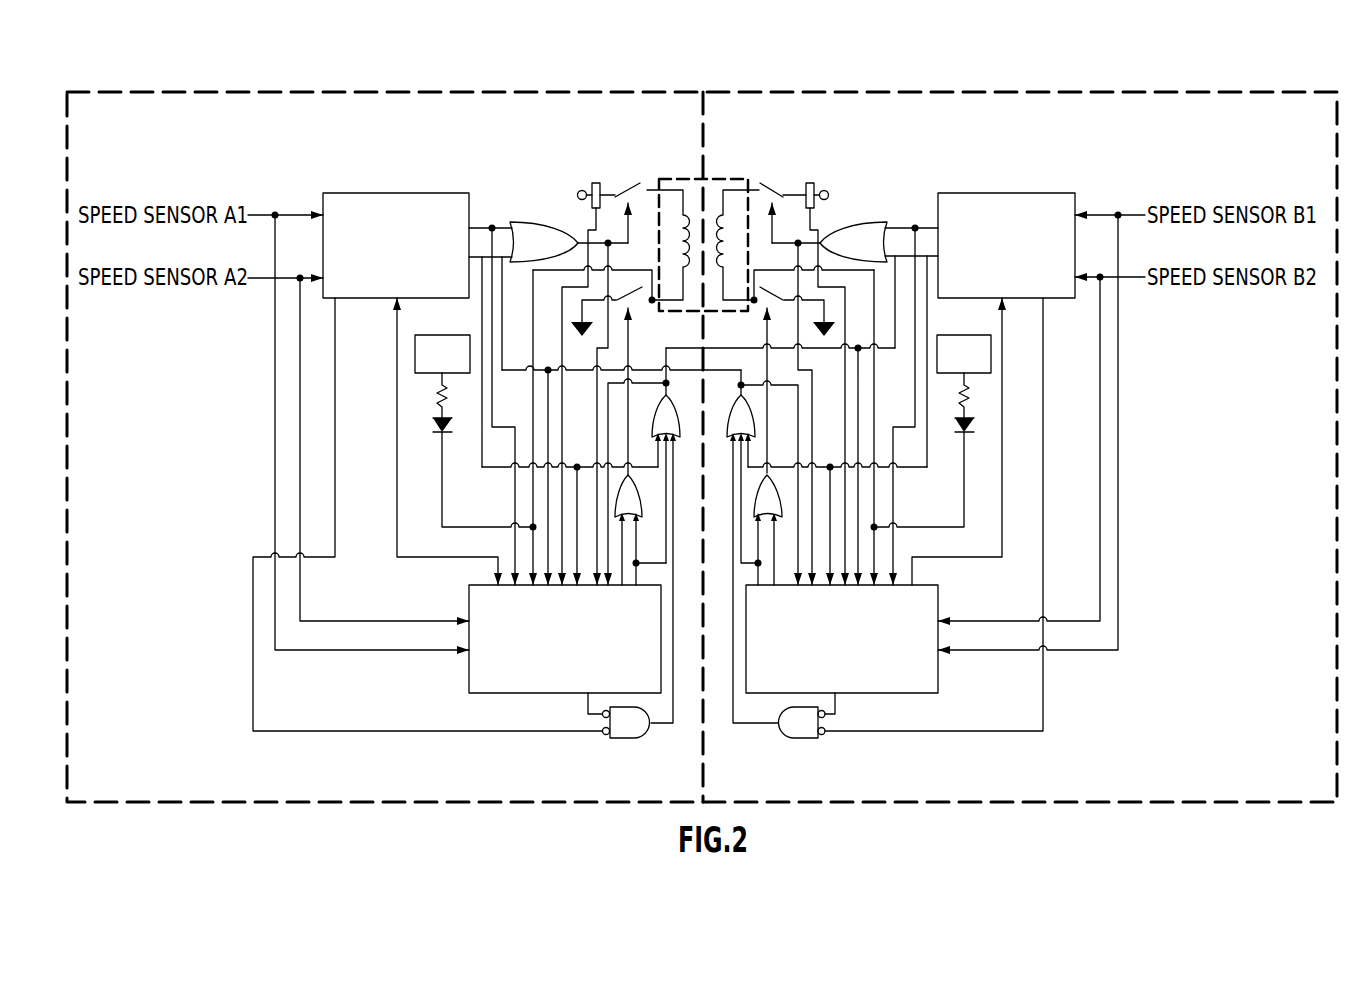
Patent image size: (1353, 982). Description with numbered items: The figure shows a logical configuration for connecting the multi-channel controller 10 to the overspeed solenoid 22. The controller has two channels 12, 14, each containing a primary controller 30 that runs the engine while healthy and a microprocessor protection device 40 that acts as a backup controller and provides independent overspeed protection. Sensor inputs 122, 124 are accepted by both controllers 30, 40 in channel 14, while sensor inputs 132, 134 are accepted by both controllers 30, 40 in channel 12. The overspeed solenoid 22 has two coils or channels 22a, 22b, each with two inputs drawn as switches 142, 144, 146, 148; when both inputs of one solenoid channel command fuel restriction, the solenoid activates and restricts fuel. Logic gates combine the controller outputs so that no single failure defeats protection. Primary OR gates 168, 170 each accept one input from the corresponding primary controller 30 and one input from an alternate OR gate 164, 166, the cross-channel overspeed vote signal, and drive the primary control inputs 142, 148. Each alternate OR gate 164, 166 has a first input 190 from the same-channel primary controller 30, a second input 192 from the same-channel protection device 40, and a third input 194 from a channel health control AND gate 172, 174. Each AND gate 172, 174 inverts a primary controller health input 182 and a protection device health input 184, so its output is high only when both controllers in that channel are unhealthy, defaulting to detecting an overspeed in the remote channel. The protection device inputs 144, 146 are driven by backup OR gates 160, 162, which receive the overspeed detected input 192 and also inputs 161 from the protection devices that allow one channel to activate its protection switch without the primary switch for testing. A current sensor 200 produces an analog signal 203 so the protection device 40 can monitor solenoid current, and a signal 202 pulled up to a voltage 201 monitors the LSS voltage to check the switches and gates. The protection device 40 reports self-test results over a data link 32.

The multi-channel controller 10 is at (742, 62).
The channel 12 is at (303, 92).
The channel 14 is at (925, 92).
The overspeed solenoid 22 is at (716, 180).
The solenoid channel 22a is at (688, 143).
The solenoid channel 22b is at (735, 180).
The primary controller 30 is at (699, 245).
The data link 32 is at (397, 422).
The microprocessor protection device 40 is at (703, 639).
The sensor input 122 is at (1107, 215).
The sensor input 124 is at (1105, 283).
The sensor input 132 is at (290, 214).
The sensor input 134 is at (288, 296).
The primary control input 142 is at (776, 205).
The protection device input 144 is at (765, 312).
The protection device input 146 is at (632, 312).
The primary control input 148 is at (637, 205).
The backup OR gate 160 is at (758, 493).
The backup OR gate input 161 is at (773, 530).
The backup OR gate 162 is at (643, 500).
The alternate OR gate 164 is at (730, 420).
The alternate OR gate 166 is at (679, 408).
The primary OR gate 168 is at (876, 222).
The primary OR gate 170 is at (522, 222).
The channel health control AND gate 172 is at (623, 739).
The channel health control AND gate 174 is at (800, 739).
The primary controller health input 182 is at (507, 732).
The protection device health input 184 is at (587, 700).
The first alternate OR gate input 190 is at (508, 470).
The second alternate OR gate input 192 is at (650, 567).
The third alternate OR gate input 194 is at (673, 672).
The current sensor 200 is at (578, 193).
The voltage 201 is at (703, 431).
The signal 202 is at (633, 270).
The analog signal 203 is at (605, 210).